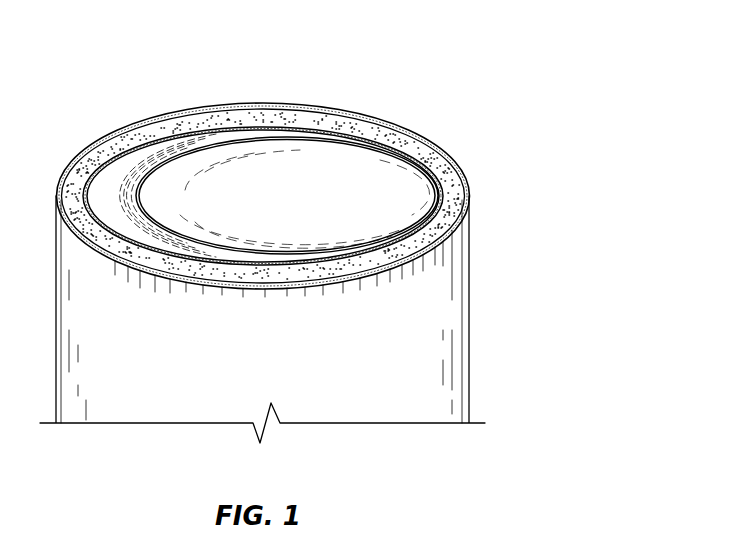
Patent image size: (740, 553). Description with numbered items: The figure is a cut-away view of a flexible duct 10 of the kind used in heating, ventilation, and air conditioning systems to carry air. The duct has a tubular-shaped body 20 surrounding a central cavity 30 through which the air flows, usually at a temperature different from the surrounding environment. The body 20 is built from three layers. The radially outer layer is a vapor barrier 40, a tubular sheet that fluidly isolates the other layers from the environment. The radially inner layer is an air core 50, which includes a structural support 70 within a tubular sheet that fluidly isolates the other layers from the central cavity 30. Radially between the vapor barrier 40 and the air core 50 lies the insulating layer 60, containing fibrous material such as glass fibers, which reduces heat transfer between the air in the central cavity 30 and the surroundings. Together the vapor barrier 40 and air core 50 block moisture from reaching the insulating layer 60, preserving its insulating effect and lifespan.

The flexible duct 10 is at (521, 44).
The tubular-shaped body 20 is at (334, 362).
The central cavity 30 is at (300, 190).
The vapor barrier 40 is at (467, 178).
The air core 50 is at (388, 150).
The insulating layer 60 is at (426, 155).
The structural support 70 is at (176, 153).